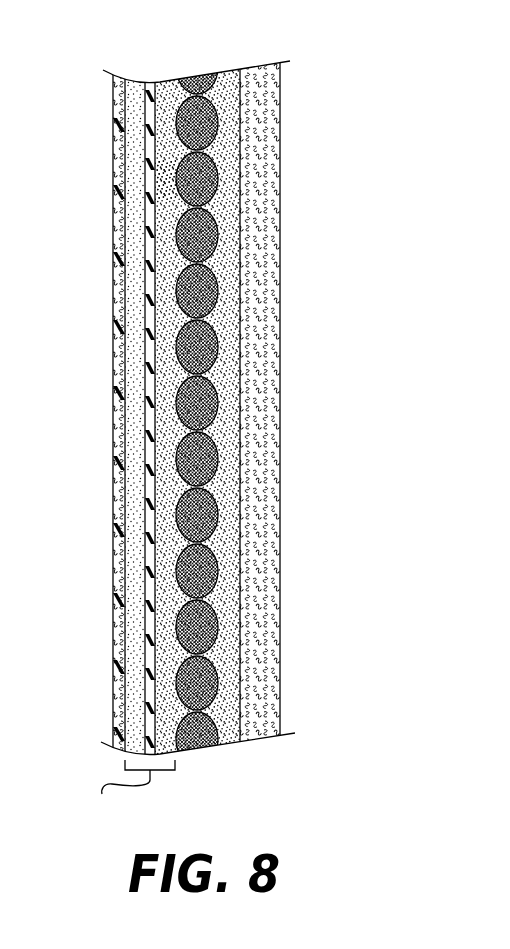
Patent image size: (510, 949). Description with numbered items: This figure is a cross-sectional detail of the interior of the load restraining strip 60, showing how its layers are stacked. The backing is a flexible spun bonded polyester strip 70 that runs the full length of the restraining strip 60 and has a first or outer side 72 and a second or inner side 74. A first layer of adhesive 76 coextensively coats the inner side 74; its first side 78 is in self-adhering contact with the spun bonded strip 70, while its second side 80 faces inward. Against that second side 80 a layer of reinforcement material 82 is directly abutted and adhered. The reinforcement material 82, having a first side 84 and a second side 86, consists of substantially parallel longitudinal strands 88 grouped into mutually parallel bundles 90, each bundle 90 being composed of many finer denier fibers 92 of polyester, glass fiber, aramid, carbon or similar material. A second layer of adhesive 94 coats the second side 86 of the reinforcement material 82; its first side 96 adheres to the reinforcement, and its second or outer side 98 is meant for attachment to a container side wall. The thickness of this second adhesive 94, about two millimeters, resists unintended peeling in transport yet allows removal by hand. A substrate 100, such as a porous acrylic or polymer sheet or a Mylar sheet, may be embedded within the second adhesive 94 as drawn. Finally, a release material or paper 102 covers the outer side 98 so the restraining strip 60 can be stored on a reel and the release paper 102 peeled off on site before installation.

The restraining strip 60 is at (303, 283).
The flexible spun bonded polyester strip 70 is at (286, 246).
The first or outer side 72 is at (280, 352).
The second or inner side 74 is at (237, 381).
The first layer of adhesive 76 is at (228, 752).
The first side 78 is at (235, 566).
The second side 80 is at (223, 623).
The layer of reinforcement material 82 is at (228, 112).
The first side 84 is at (218, 178).
The second side 86 is at (180, 100).
The longitudinal strands 88 is at (235, 72).
The bundles 90 is at (164, 181).
The finer denier fibers 92 is at (180, 235).
The second layer of adhesive 94 is at (138, 97).
The first side 96 is at (174, 392).
The second or outer side 98 is at (118, 446).
The substrate 100 is at (138, 537).
The release material or paper 102 is at (108, 590).